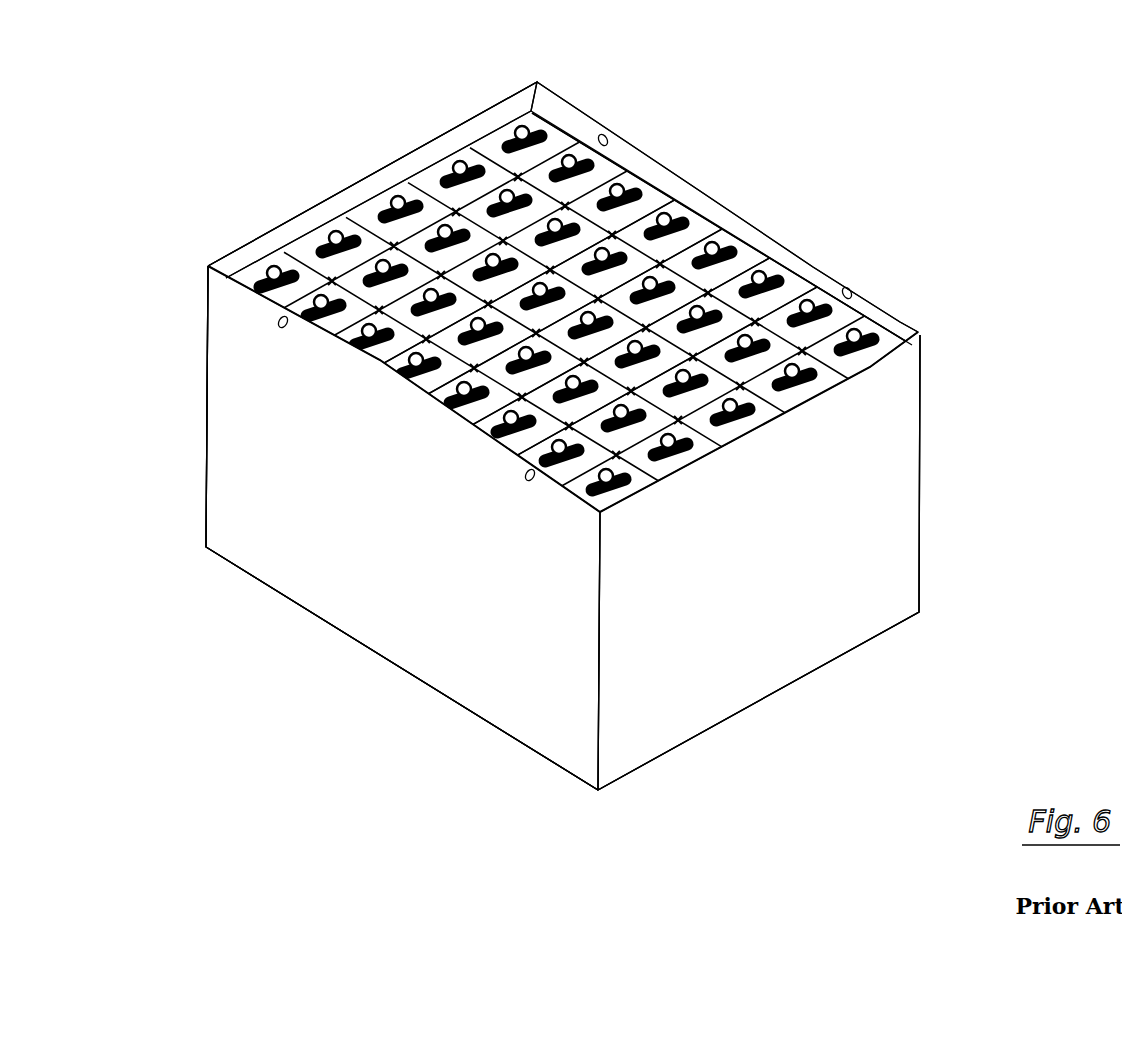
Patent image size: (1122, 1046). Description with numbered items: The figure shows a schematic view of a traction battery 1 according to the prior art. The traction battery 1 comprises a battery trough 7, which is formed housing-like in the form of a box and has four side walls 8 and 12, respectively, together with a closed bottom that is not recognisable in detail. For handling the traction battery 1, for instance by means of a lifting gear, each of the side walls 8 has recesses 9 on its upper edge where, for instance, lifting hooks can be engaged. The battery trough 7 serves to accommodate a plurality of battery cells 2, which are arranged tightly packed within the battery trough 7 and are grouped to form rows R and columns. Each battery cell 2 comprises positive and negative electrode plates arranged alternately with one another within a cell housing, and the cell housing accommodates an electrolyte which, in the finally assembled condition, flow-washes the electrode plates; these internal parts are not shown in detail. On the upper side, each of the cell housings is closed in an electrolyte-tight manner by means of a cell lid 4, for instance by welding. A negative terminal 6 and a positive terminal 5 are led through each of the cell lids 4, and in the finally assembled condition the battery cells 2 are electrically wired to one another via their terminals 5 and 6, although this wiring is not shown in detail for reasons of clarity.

The traction battery 1 is at (997, 193).
The battery cells 2 is at (497, 420).
The cell lid 4 is at (850, 367).
The positive terminal 5 is at (253, 263).
The negative terminal 6 is at (915, 338).
The battery trough 7 is at (715, 683).
The side walls 8 is at (648, 180).
The recesses 9 is at (605, 133).
The side walls 12 is at (427, 157).
The rows R is at (690, 222).